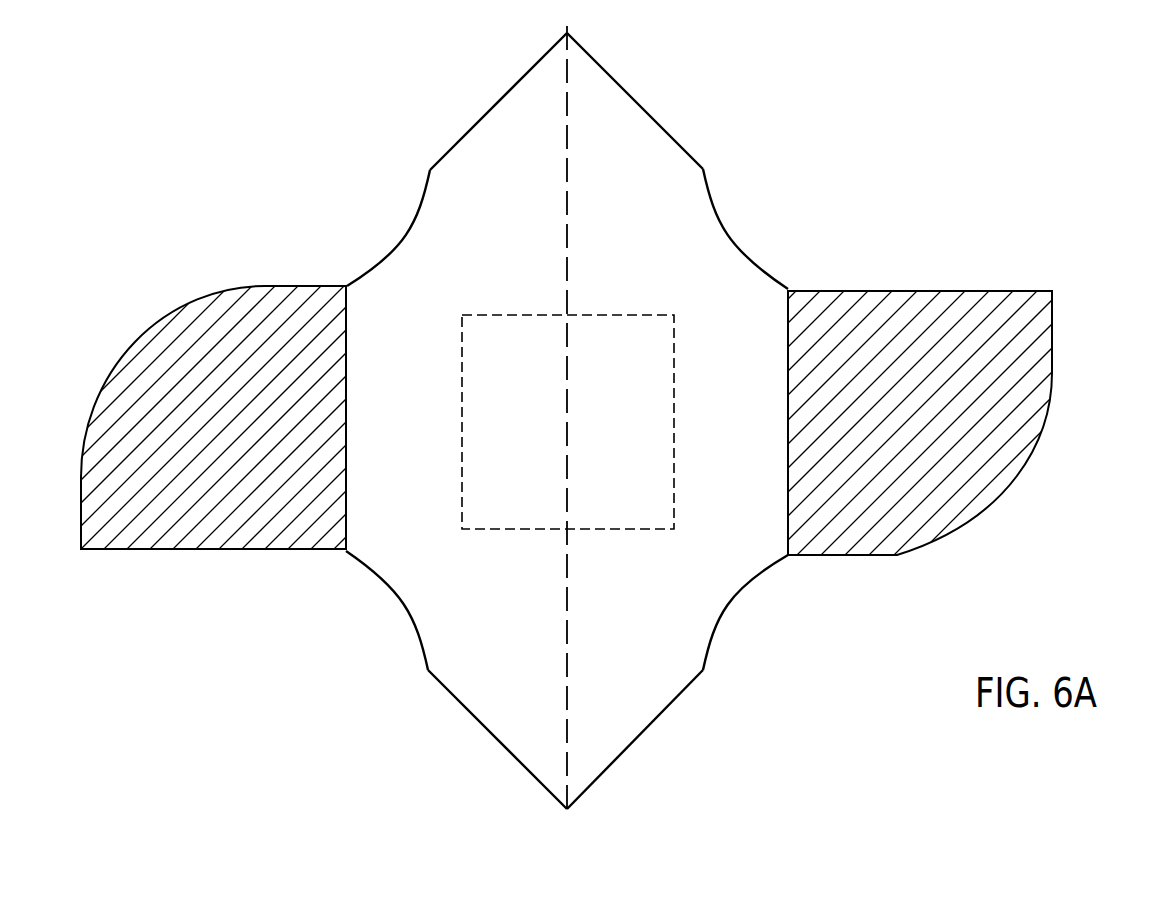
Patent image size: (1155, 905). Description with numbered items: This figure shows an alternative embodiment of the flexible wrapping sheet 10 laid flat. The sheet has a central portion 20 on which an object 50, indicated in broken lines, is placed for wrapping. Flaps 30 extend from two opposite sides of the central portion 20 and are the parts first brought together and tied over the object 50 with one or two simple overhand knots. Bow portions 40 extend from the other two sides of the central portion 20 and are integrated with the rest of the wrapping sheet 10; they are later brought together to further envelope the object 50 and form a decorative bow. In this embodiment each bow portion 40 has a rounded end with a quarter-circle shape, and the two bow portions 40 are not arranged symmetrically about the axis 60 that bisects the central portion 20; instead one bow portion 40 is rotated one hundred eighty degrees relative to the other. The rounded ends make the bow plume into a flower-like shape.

The wrapping sheet 10 is at (278, 184).
The central portion 20 is at (438, 593).
The flaps 30 is at (632, 123).
The bow portions 40 is at (170, 518).
The object 50 is at (582, 441).
The axis 60 is at (566, 695).